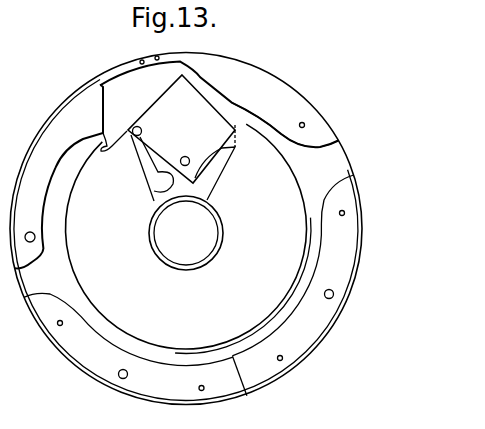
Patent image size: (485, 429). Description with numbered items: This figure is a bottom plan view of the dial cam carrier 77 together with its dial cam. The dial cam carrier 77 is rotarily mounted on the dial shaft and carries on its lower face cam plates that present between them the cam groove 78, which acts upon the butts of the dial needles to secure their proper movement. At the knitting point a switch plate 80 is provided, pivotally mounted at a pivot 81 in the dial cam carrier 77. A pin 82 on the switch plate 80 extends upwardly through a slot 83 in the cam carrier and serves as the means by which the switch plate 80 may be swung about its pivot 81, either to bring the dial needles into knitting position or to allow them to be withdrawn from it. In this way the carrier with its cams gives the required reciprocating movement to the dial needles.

The dial cam carrier 77 is at (361, 245).
The cam groove 78 is at (268, 122).
The switch plate 80 is at (192, 103).
The pivot 81 is at (134, 126).
The pin 82 is at (188, 158).
The slot 83 is at (157, 187).